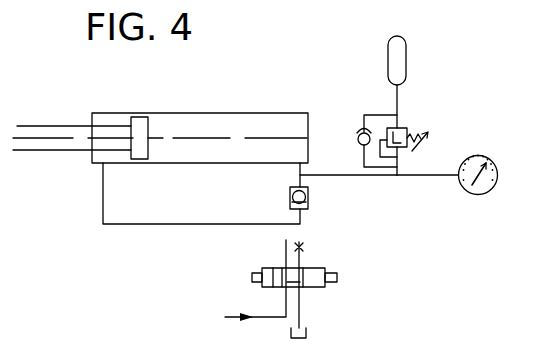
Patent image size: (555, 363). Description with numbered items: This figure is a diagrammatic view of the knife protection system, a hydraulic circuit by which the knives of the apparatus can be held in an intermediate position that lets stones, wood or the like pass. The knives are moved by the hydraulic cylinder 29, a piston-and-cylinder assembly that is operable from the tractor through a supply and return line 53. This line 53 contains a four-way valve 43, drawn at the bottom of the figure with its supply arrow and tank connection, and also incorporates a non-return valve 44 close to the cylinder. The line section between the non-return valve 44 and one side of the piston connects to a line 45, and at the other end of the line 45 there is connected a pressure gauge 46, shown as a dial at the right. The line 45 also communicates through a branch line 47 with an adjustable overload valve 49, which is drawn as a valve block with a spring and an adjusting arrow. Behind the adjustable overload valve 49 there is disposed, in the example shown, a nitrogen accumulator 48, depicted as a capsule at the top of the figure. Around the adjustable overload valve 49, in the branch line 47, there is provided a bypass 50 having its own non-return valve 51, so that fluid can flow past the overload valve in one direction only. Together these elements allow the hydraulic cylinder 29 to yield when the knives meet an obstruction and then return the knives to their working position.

The hydraulic cylinder 29 is at (232, 125).
The four-way valve 43 is at (311, 268).
The non-return valve 44 is at (309, 192).
The line 45 is at (350, 176).
The pressure gauge 46 is at (498, 175).
The branch line 47 is at (398, 176).
The nitrogen accumulator 48 is at (399, 57).
The adjustable overload valve 49 is at (413, 134).
The bypass 50 is at (364, 115).
The non-return valve 51 is at (358, 131).
The supply and return line 53 is at (296, 240).